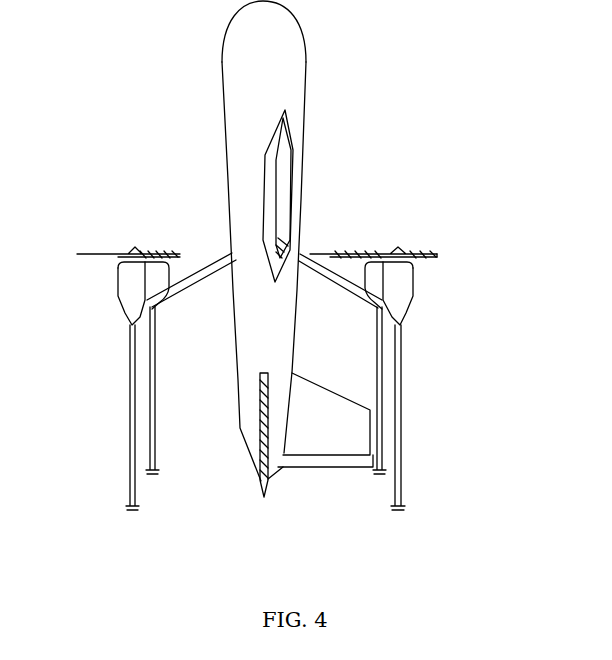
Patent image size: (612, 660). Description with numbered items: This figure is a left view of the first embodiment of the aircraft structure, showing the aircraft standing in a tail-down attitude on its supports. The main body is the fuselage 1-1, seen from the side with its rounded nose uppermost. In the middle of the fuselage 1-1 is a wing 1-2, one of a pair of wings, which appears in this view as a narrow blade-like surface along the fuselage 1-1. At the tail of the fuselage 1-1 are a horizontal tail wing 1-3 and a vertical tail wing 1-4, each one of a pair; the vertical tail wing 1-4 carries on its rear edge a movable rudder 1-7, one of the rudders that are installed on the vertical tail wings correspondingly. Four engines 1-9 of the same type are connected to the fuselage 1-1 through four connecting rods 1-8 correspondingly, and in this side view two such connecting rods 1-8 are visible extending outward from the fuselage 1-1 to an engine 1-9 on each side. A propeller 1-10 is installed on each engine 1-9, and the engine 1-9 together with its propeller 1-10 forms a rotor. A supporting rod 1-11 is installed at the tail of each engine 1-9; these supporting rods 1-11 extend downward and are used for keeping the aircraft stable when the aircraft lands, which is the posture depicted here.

The fuselage 1-1 is at (300, 85).
The wing 1-2 is at (290, 174).
The horizontal tail wing 1-3 is at (260, 421).
The vertical tail wing 1-4 is at (320, 440).
The rudder 1-7 is at (310, 470).
The connecting rod 1-8 is at (316, 252).
The engine 1-9 is at (408, 298).
The propeller 1-10 is at (437, 257).
The supporting rod 1-11 is at (401, 413).